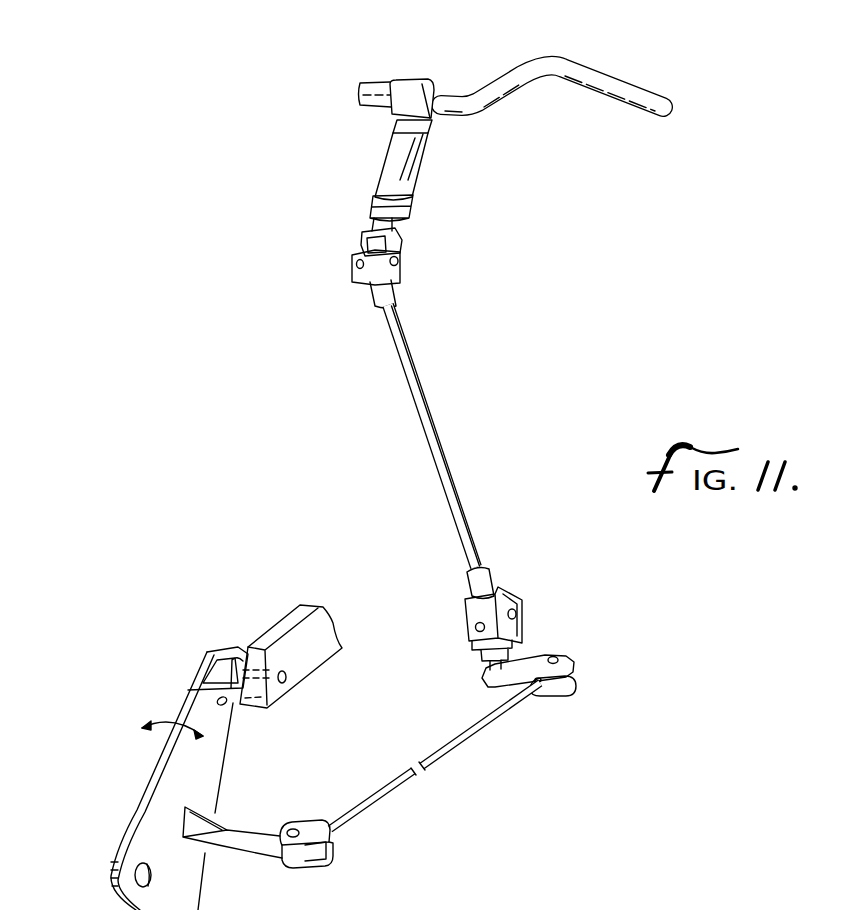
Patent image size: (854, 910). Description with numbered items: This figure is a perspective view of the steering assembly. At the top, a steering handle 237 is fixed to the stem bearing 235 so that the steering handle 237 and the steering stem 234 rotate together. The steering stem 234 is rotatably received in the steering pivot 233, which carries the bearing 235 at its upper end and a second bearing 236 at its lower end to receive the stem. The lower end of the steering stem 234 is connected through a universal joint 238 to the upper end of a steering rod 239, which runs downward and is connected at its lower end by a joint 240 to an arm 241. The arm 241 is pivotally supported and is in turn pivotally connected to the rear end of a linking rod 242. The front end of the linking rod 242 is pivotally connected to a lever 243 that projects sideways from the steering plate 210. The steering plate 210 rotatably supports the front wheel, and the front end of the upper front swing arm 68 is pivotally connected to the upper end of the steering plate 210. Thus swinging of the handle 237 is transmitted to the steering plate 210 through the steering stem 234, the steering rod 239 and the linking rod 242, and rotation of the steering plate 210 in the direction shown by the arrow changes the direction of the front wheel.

The steering handle 237 is at (521, 72).
The stem bearing 235 is at (433, 128).
The steering pivot 233 is at (388, 162).
The bearing 236 is at (372, 205).
The steering stem 234 is at (388, 226).
The universal joint 238 is at (397, 266).
The steering rod 239 is at (431, 422).
The joint 240 is at (499, 592).
The arm 241 is at (548, 658).
The linking rod 242 is at (467, 742).
The lever 243 is at (258, 860).
The steering plate 210 is at (141, 811).
The upper front swing arm 68 is at (290, 623).